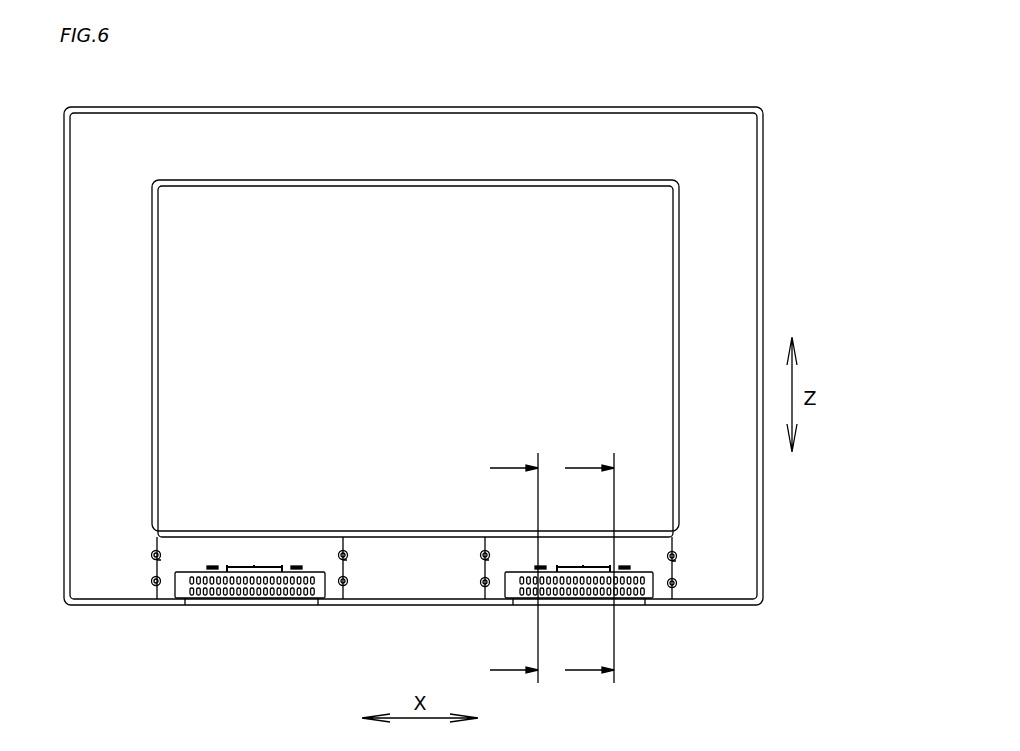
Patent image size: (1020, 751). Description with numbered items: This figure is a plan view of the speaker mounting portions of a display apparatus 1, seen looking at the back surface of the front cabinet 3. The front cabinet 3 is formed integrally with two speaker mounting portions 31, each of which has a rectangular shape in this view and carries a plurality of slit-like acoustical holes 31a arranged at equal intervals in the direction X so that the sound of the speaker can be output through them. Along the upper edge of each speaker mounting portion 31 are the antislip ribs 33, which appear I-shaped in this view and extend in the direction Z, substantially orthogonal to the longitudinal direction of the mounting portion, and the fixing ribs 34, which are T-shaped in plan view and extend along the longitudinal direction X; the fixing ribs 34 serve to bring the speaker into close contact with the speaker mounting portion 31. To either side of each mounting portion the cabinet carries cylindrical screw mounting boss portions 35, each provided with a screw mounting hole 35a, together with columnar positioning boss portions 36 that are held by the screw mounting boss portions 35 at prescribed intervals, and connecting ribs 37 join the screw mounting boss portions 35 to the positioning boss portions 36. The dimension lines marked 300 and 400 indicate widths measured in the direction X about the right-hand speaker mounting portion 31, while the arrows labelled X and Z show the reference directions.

The display device 1 is at (705, 83).
The front cabinet 3 is at (378, 133).
The speaker mounting portion 31 is at (255, 598).
The connector mounting portion 31a is at (187, 598).
The antislip rib 33 is at (212, 568).
The fixing rib 34 is at (228, 568).
The screw mounting boss portion 35 is at (160, 553).
The screw mounting hole 35a is at (150, 553).
The positioning boss portion 36 is at (153, 568).
The connecting rib 37 is at (150, 562).
The dimension 300 is at (589, 570).
The dimension 400 is at (514, 570).